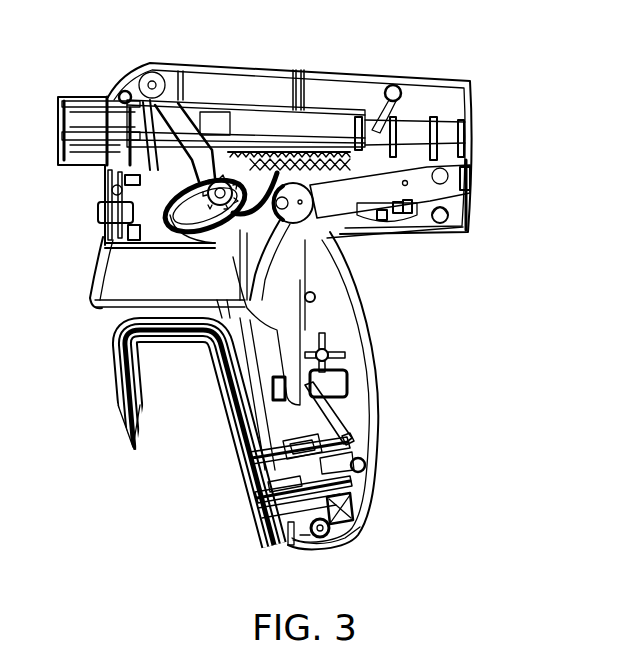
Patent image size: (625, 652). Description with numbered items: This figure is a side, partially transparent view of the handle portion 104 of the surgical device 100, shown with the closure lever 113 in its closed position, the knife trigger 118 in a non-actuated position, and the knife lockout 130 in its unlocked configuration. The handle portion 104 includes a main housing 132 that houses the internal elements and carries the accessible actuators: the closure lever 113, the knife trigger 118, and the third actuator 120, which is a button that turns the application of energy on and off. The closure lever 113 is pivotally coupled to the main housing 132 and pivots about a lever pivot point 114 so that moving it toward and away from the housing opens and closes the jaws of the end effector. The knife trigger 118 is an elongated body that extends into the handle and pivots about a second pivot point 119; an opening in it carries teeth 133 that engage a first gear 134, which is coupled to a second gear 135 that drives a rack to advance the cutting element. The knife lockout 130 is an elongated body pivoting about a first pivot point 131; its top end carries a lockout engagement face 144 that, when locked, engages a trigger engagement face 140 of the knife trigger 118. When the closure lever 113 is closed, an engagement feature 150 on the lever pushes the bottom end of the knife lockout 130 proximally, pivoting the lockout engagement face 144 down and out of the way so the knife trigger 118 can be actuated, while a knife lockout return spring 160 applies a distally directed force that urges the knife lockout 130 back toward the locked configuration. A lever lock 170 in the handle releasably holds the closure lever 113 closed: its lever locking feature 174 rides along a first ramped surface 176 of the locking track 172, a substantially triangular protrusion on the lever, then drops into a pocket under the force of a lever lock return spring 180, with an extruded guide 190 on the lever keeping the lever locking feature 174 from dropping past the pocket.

The surgical device 100 is at (505, 145).
The handle portion 104 is at (382, 410).
The closure lever 113 is at (228, 443).
The lever pivot point 114 is at (300, 215).
The knife trigger 118 is at (127, 283).
The second pivot point 119 is at (150, 80).
The third actuator 120 is at (97, 212).
The knife lockout 130 is at (302, 318).
The first pivot point 131 is at (316, 297).
The main housing 132 is at (350, 535).
The teeth 133 is at (203, 217).
The first gear 134 is at (215, 190).
The second gear 135 is at (190, 192).
The trigger engagement face 140 is at (290, 290).
The lockout engagement face 144 is at (247, 318).
The engagement feature 150 is at (355, 440).
The knife lockout return spring 160 is at (340, 387).
The lever lock 170 is at (340, 485).
The locking track 172 is at (292, 540).
The lever locking feature 174 is at (260, 507).
The first ramped surface 176 is at (366, 466).
The lever lock return spring 180 is at (356, 518).
The extruded guide 190 is at (253, 490).